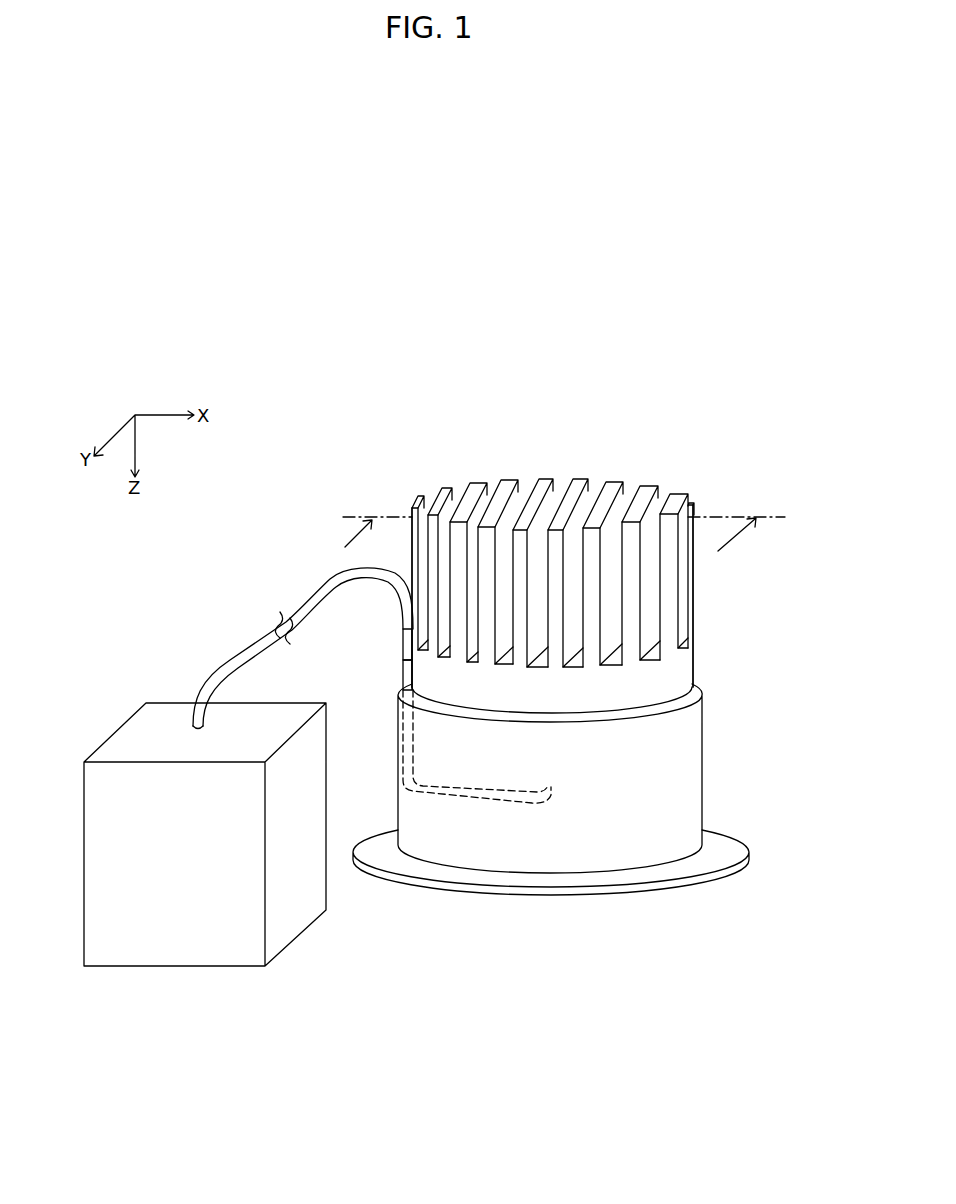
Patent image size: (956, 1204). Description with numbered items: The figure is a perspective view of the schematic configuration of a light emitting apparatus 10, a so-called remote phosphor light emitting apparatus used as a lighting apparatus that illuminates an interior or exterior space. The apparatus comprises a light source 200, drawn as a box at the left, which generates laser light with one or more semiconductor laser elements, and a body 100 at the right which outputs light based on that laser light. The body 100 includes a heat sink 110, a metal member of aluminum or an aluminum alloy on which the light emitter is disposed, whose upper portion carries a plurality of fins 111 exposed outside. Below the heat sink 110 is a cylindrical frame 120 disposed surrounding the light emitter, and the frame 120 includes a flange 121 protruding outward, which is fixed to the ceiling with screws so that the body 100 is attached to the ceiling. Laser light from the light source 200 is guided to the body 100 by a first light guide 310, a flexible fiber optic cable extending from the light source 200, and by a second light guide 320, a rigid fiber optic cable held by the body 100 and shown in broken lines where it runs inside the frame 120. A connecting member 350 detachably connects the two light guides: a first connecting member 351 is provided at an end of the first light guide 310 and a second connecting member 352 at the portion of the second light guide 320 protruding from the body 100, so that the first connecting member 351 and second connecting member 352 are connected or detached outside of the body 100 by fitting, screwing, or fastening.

The light emitting apparatus 10 is at (730, 360).
The body 100 is at (732, 504).
The heat sink 110 is at (693, 668).
The fins 111 is at (592, 490).
The frame 120 is at (703, 730).
The flange 121 is at (718, 857).
The light source 200 is at (172, 714).
The first light guide 310 is at (309, 590).
The second light guide 320 is at (497, 813).
The connecting member 350 is at (341, 641).
The first connecting member 351 is at (401, 642).
The second connecting member 352 is at (401, 685).